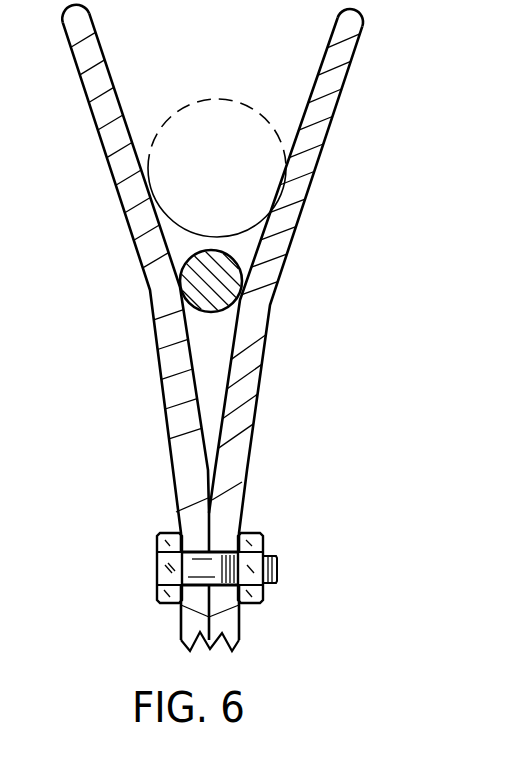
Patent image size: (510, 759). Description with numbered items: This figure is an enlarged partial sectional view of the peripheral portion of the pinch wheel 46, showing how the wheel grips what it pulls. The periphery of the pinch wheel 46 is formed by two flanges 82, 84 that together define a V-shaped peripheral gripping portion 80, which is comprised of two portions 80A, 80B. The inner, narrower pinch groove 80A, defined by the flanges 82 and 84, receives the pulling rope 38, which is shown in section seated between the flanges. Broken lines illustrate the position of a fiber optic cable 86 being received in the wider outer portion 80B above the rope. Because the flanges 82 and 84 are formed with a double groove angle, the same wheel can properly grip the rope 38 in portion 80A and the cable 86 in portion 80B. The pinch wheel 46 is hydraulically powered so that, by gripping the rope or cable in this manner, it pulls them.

The pulling rope 38 is at (217, 284).
The pinch wheel 46 is at (257, 373).
The V-shaped peripheral gripping portion 80 is at (203, 355).
The pinch groove 80A is at (213, 427).
The cable-receiving portion 80B is at (278, 98).
The flange 82 is at (298, 198).
The flange 84 is at (110, 182).
The fiber optic cable 86 is at (222, 126).